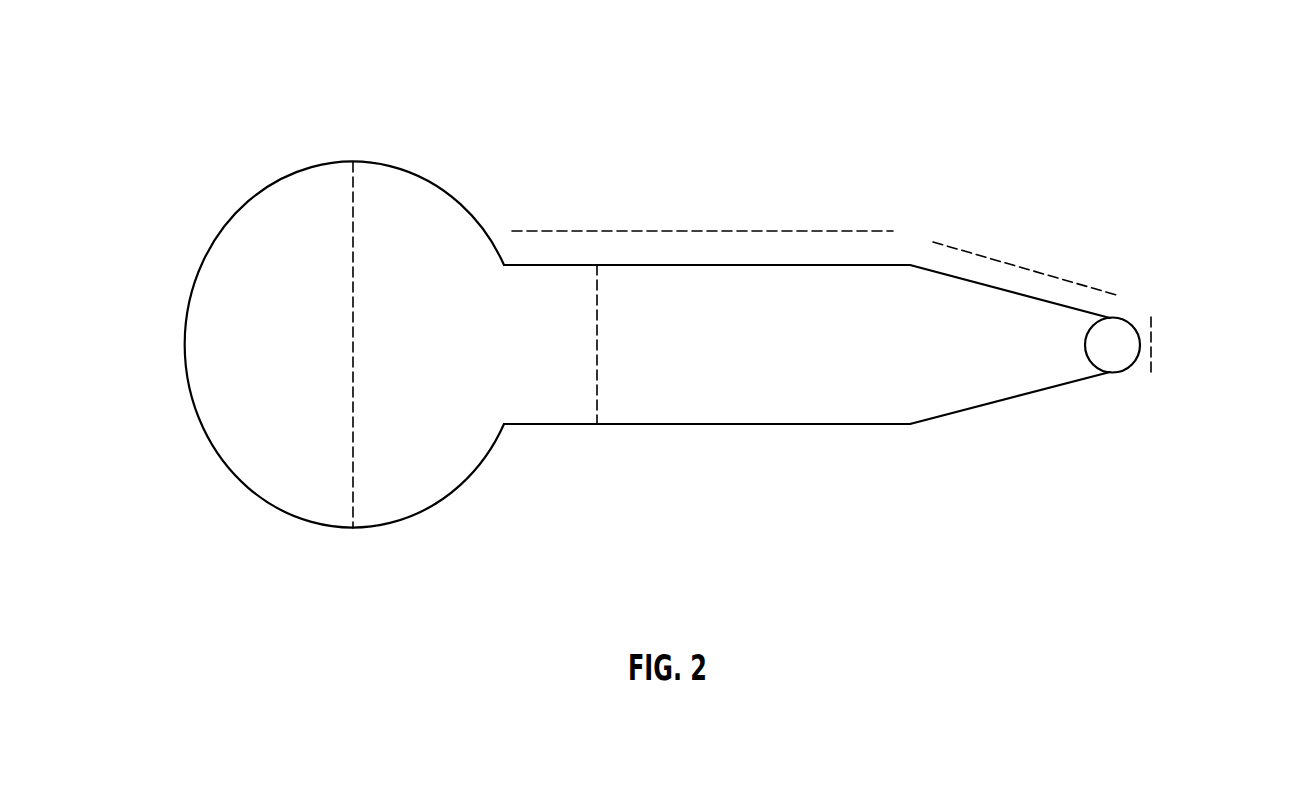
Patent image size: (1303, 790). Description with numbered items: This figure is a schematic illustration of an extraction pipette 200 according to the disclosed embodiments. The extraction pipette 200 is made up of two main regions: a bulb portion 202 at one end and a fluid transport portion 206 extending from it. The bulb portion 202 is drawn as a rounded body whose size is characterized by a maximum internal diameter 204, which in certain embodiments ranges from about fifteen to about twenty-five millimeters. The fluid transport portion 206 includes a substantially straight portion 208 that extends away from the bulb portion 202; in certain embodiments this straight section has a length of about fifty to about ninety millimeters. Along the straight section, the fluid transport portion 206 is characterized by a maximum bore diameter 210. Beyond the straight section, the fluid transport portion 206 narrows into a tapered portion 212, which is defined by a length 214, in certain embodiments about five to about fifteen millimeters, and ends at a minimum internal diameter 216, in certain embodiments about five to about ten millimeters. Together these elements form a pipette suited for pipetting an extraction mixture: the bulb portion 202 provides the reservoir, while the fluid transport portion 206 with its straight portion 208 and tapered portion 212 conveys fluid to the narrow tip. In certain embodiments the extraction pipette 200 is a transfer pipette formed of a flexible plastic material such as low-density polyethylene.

The extraction pipette 200 is at (194, 98).
The bulb portion 202 is at (186, 331).
The maximum internal diameter 204 is at (353, 345).
The fluid transport portion 206 is at (723, 424).
The substantially straight portion 208 is at (719, 231).
The maximum bore diameter 210 is at (597, 357).
The tapered portion 212 is at (1010, 398).
The length 214 is at (1055, 278).
The minimum internal diameter 216 is at (1151, 353).